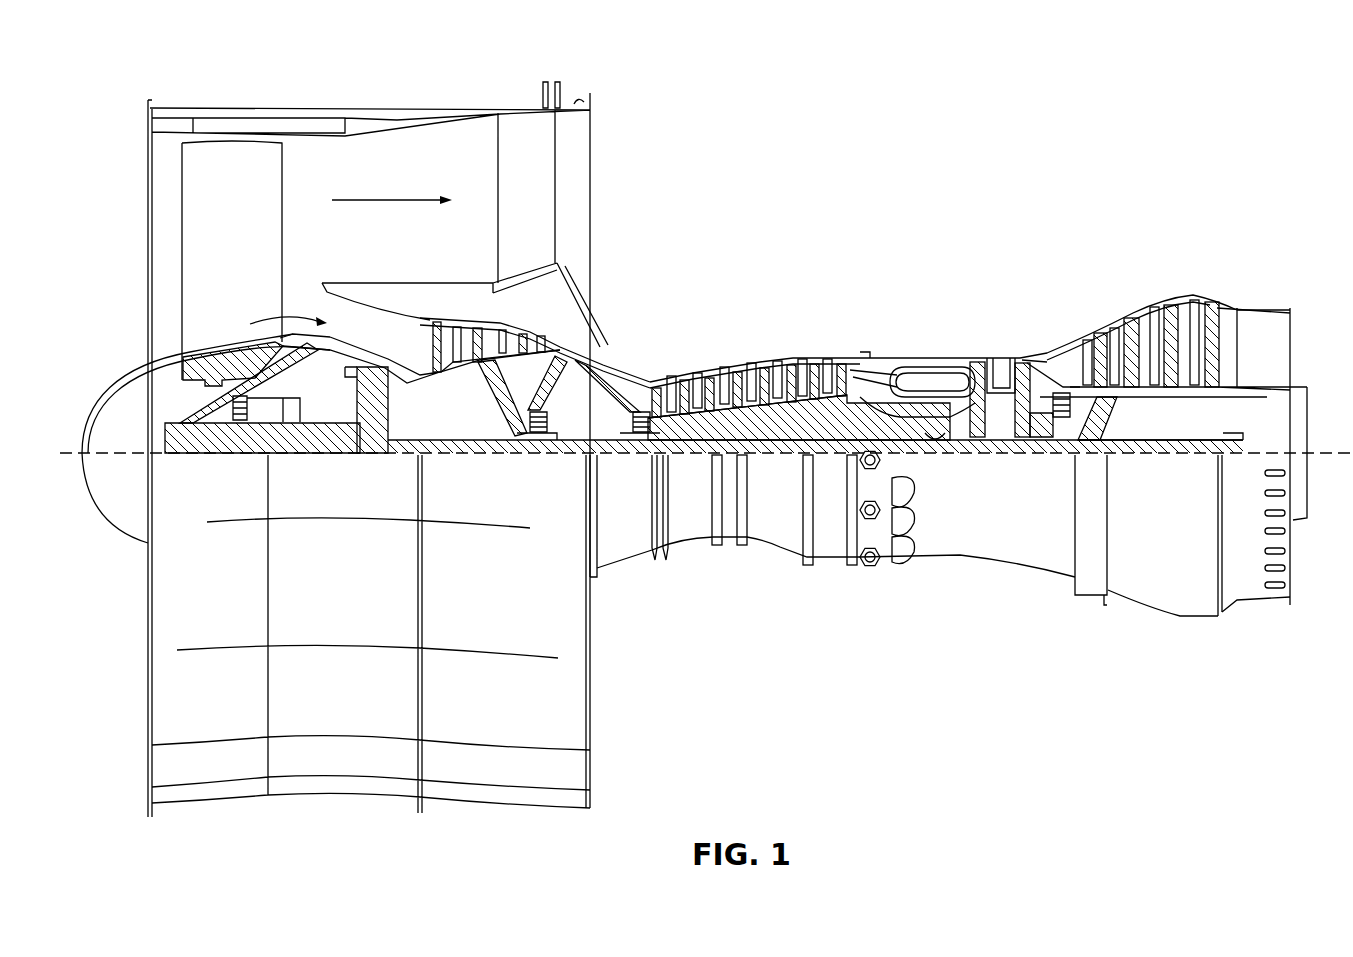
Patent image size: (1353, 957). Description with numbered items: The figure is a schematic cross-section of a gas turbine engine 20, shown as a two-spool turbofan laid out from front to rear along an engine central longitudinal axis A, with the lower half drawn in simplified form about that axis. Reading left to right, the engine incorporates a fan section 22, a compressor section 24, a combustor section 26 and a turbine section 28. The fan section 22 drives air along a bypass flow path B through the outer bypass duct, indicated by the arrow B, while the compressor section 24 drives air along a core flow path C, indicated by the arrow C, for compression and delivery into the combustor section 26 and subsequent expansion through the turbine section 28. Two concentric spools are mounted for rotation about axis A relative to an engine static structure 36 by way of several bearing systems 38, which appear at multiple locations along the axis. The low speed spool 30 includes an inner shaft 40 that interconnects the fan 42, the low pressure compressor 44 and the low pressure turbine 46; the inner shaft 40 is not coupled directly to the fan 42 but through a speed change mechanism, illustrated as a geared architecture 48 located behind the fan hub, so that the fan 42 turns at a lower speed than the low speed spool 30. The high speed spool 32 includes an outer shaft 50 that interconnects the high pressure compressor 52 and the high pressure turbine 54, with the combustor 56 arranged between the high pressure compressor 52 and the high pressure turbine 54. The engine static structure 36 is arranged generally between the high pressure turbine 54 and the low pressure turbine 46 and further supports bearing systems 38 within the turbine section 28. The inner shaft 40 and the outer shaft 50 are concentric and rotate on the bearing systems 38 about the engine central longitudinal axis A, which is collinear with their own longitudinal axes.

The gas turbine engine 20 is at (1122, 146).
The fan section 22 is at (245, 97).
The compressor section 24 is at (769, 316).
The combustor section 26 is at (920, 318).
The turbine section 28 is at (1062, 298).
The low speed spool 30 is at (794, 462).
The high speed spool 32 is at (838, 400).
The engine static structure 36 is at (830, 570).
The bearing systems 38 is at (242, 415).
The inner shaft 40 is at (600, 447).
The fan 42 is at (257, 233).
The low pressure compressor 44 is at (507, 333).
The low pressure turbine 46 is at (1157, 323).
The geared architecture 48 is at (372, 422).
The outer shaft 50 is at (933, 443).
The high pressure compressor 52 is at (731, 383).
The high pressure turbine 54 is at (1003, 353).
The combustor 56 is at (927, 377).
The engine central longitudinal axis A is at (1317, 450).
The bypass flow path B is at (393, 197).
The core flow path C is at (263, 318).